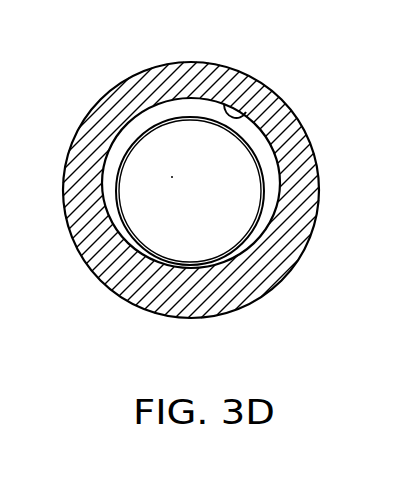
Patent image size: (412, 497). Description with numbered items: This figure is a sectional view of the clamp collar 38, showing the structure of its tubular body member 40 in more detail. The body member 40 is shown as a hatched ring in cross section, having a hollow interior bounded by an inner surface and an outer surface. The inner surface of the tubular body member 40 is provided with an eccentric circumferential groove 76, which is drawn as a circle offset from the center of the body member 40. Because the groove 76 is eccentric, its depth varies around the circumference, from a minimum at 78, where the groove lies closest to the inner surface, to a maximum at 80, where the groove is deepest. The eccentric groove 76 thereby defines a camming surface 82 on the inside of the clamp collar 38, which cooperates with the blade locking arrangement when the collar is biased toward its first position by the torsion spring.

The clamp collar 38 is at (227, 183).
The tubular body member 40 is at (305, 206).
The eccentric circumferential groove 76 is at (262, 157).
The minimum depth of groove 78 is at (129, 301).
The maximum depth of groove 80 is at (192, 100).
The camming surface 82 is at (245, 103).